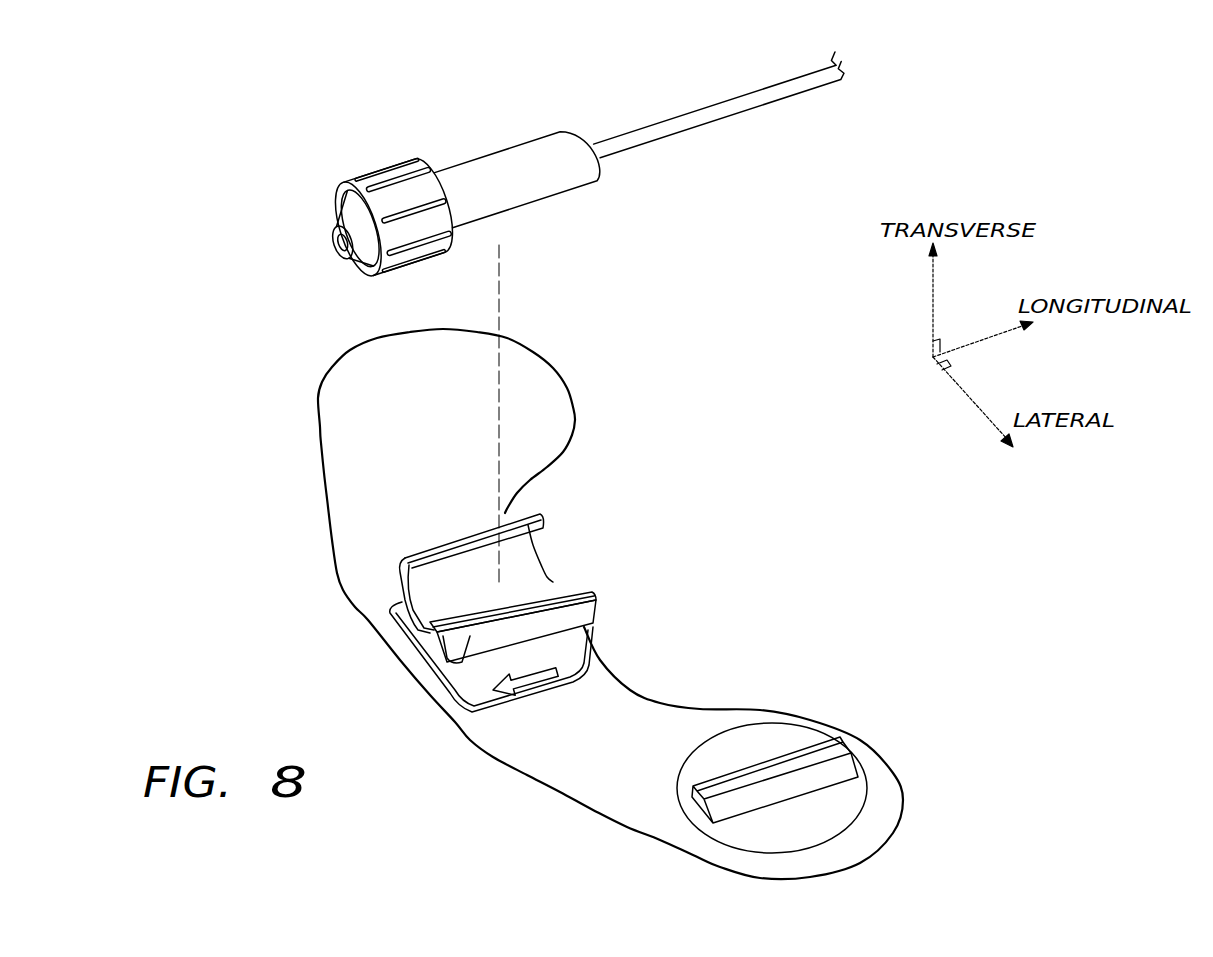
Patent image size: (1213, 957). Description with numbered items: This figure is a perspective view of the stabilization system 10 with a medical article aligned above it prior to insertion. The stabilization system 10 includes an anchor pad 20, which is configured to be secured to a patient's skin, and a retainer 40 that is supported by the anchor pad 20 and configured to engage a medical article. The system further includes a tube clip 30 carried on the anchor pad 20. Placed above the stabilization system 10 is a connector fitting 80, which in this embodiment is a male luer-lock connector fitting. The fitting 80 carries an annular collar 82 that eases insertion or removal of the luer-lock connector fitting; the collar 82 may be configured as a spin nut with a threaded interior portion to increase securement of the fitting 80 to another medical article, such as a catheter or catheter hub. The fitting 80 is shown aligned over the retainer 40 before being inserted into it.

The stabilization system 10 is at (645, 604).
The anchor pad 20 is at (537, 383).
The tube clip 30 is at (830, 812).
The retainer 40 is at (473, 687).
The connector fitting 80 is at (528, 156).
The annular collar 82 is at (383, 170).